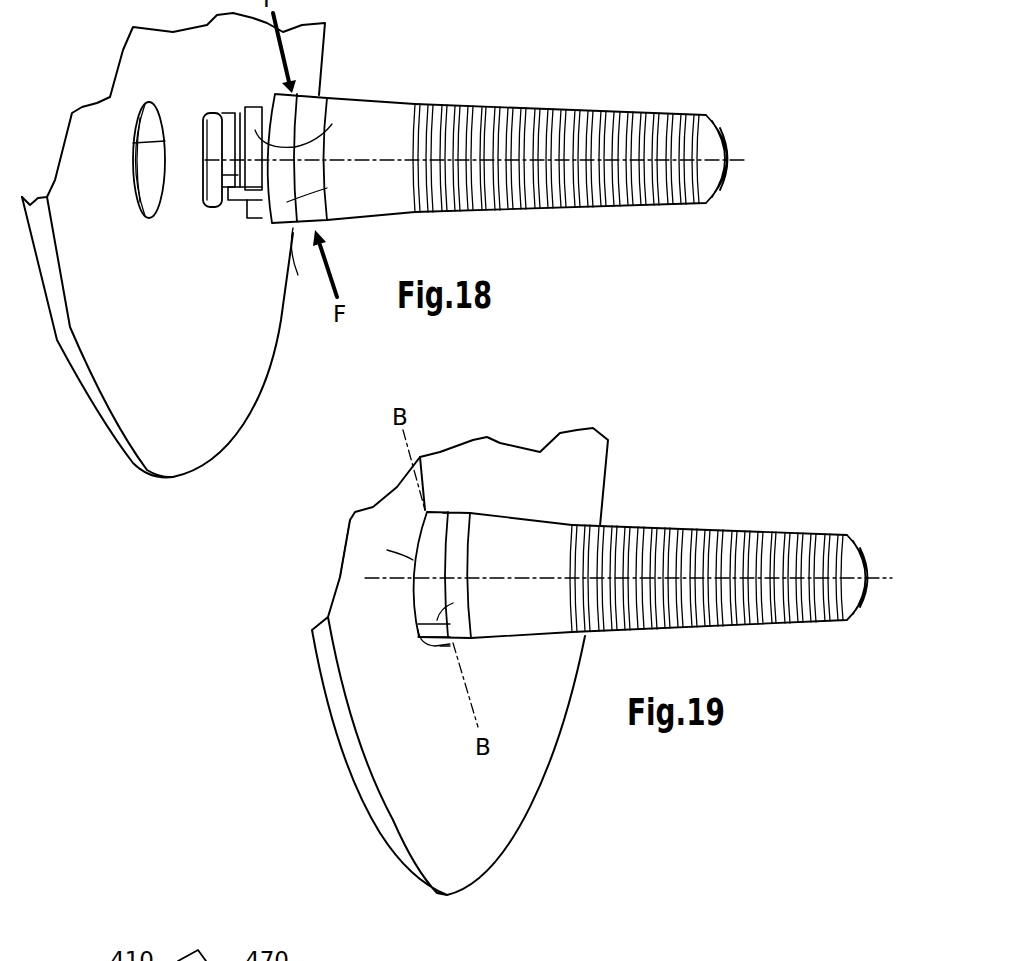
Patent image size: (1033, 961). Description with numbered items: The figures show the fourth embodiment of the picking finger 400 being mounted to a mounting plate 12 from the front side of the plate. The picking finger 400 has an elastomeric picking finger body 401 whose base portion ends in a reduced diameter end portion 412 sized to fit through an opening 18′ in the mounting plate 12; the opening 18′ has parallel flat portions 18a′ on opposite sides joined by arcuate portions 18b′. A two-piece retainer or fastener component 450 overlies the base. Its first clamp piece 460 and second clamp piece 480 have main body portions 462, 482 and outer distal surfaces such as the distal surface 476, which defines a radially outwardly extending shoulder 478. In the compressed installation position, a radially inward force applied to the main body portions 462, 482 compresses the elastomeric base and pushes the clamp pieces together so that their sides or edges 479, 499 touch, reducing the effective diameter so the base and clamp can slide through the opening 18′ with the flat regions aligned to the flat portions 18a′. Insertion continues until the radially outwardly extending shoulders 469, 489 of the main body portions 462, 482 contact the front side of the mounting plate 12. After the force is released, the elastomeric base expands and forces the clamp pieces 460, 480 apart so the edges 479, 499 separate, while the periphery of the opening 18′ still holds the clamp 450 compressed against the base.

In FIG. 18, the mounting plate 12 is at (88, 436).
In FIG. 19, the mounting plate 12 is at (376, 855).
In FIG. 18, the opening 18′ is at (128, 122).
In FIG. 18, the parallel flat portions 18a′ is at (163, 120).
In FIG. 18, the arcuate portions 18b′ is at (128, 157).
In FIG. 18, the picking finger 400 is at (480, 124).
In FIG. 19, the picking finger 400 is at (563, 588).
In FIG. 18, the picking finger body 401 is at (604, 104).
In FIG. 19, the picking finger body 401 is at (770, 515).
In FIG. 18, the reduced diameter end portion 412 is at (459, 178).
In FIG. 19, the retainer or fastener component 450 is at (388, 592).
In FIG. 19, the first clamp piece 460 is at (448, 506).
In FIG. 18, the main body portion 462 is at (288, 108).
In FIG. 19, the main body portion 462 is at (427, 542).
In FIG. 18, the radially outwardly extending shoulder 469 is at (332, 124).
In FIG. 19, the radially outwardly extending shoulder 469 is at (387, 550).
In FIG. 18, the outer distal surface 476 is at (213, 127).
In FIG. 18, the radially outwardly extending shoulder 478 is at (250, 102).
In FIG. 18, the side or edge 479 is at (327, 188).
In FIG. 19, the side or edge 479 is at (453, 603).
In FIG. 19, the second clamp piece 480 is at (448, 662).
In FIG. 18, the main body portion 482 is at (290, 212).
In FIG. 19, the main body portion 482 is at (437, 637).
In FIG. 18, the radially outwardly extending shoulder 489 is at (267, 217).
In FIG. 18, the side or edge 499 is at (298, 275).
In FIG. 19, the side or edge 499 is at (417, 643).